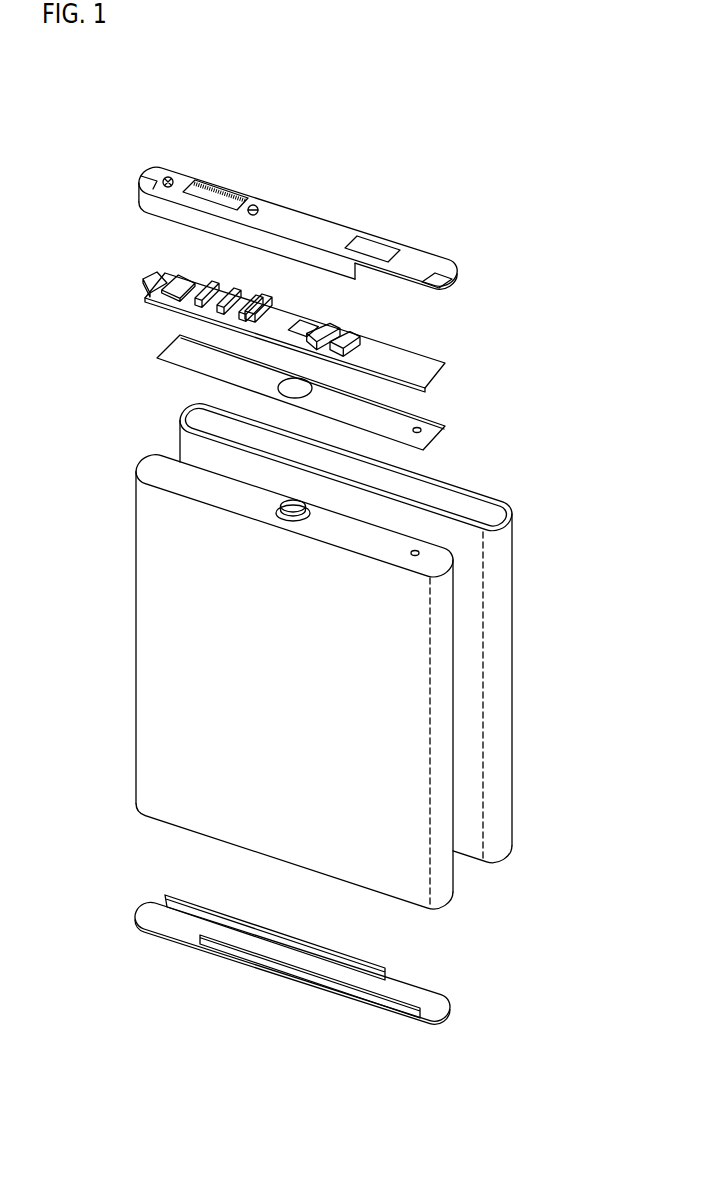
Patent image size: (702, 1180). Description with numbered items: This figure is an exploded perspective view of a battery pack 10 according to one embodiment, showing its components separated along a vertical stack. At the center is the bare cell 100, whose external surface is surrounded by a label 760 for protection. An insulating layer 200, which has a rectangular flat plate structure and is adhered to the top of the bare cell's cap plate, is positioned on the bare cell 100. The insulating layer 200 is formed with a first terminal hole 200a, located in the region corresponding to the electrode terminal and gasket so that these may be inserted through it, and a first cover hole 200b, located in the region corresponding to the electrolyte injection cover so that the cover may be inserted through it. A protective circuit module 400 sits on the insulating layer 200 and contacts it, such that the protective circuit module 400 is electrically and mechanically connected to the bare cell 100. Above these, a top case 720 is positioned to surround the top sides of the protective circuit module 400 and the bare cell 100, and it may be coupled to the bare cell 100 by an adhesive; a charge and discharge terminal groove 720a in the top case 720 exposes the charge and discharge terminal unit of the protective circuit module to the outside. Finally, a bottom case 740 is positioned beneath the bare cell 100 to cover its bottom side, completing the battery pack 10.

The battery pack 10 is at (99, 110).
The bare cell 100 is at (116, 543).
The insulating layer 200 is at (152, 356).
The first terminal hole 200a is at (312, 388).
The first cover hole 200b is at (422, 429).
The protective circuit module 400 is at (132, 272).
The top case 720 is at (292, 217).
The charge and discharge terminal groove 720a is at (208, 189).
The bottom case 740 is at (175, 927).
The label 760 is at (507, 618).